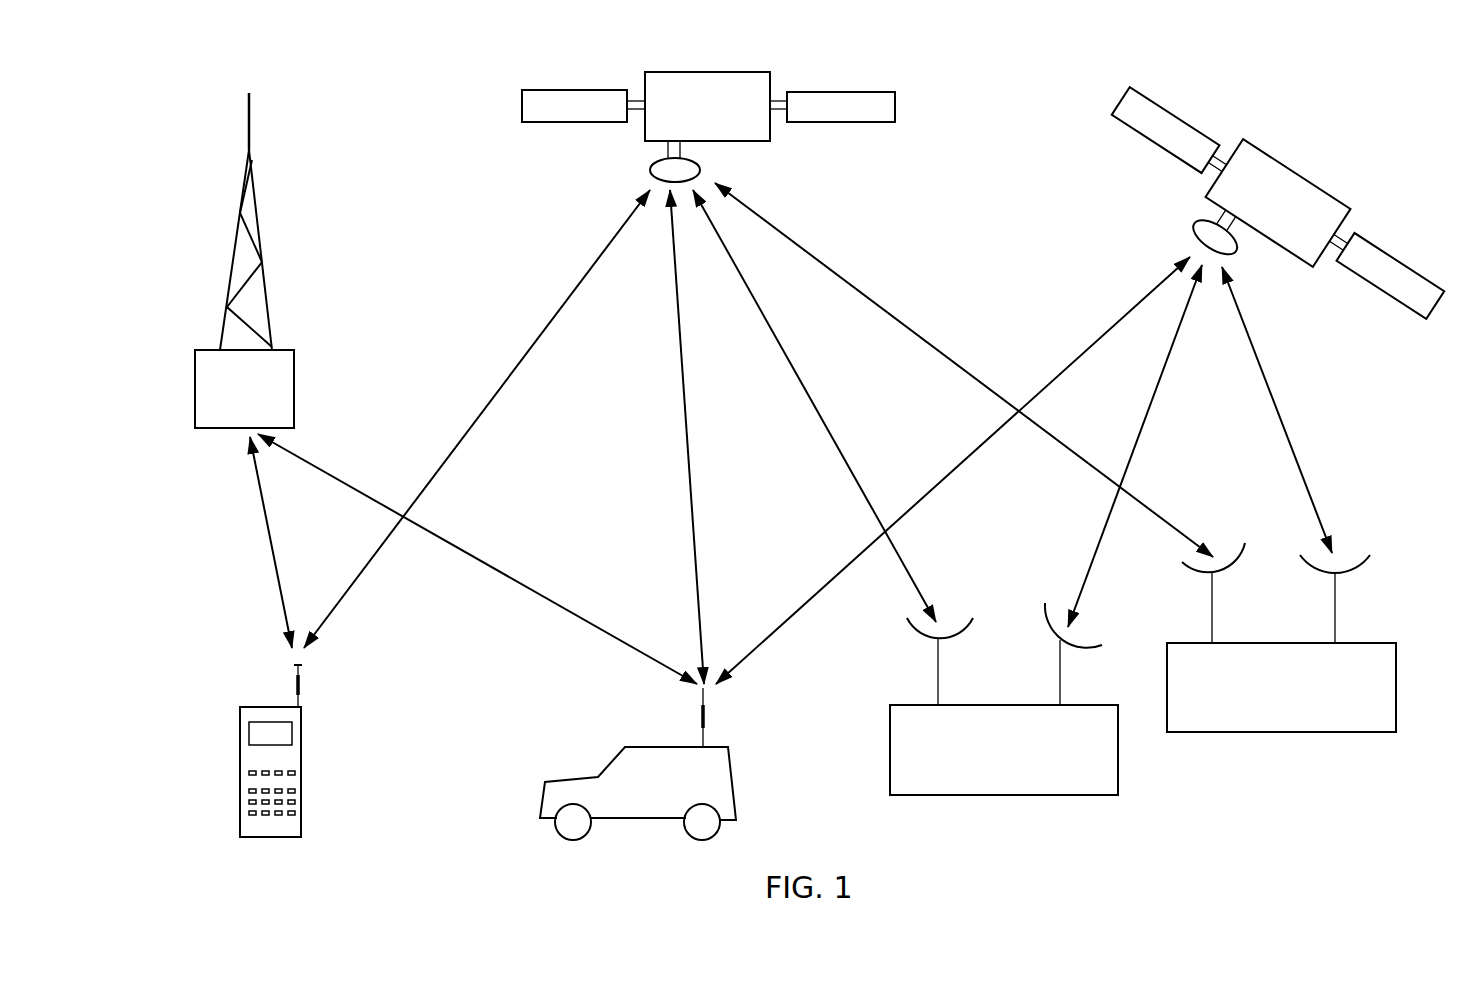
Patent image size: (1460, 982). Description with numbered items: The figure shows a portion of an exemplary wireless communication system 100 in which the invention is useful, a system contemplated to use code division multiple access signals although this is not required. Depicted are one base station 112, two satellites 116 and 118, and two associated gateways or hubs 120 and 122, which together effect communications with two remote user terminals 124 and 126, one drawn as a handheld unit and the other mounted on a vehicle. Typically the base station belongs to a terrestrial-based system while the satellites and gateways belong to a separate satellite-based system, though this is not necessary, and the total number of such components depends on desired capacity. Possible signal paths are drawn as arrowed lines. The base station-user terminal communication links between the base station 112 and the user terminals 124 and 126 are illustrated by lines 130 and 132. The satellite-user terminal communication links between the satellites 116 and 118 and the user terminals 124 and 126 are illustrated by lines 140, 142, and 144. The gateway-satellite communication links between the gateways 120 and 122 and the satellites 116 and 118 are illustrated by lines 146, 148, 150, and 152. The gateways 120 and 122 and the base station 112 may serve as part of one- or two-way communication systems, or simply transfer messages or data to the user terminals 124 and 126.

The communication system 100 is at (178, 96).
The base station 112 is at (289, 350).
The satellite 116 is at (876, 92).
The satellite 118 is at (1377, 245).
The gateway 120 is at (1098, 795).
The gateway 122 is at (1360, 732).
The user terminal 124 is at (275, 837).
The user terminal 126 is at (725, 745).
The base station-user terminal communication link 130 is at (262, 509).
The base station-user terminal communication link 132 is at (305, 453).
The satellite-user terminal communication link 140 is at (520, 352).
The satellite-user terminal communication link 142 is at (688, 413).
The satellite-user terminal communication link 144 is at (815, 585).
The gateway-satellite communication link 146 is at (822, 423).
The gateway-satellite communication link 148 is at (903, 325).
The gateway-satellite communication link 150 is at (1163, 367).
The gateway-satellite communication link 152 is at (1268, 372).